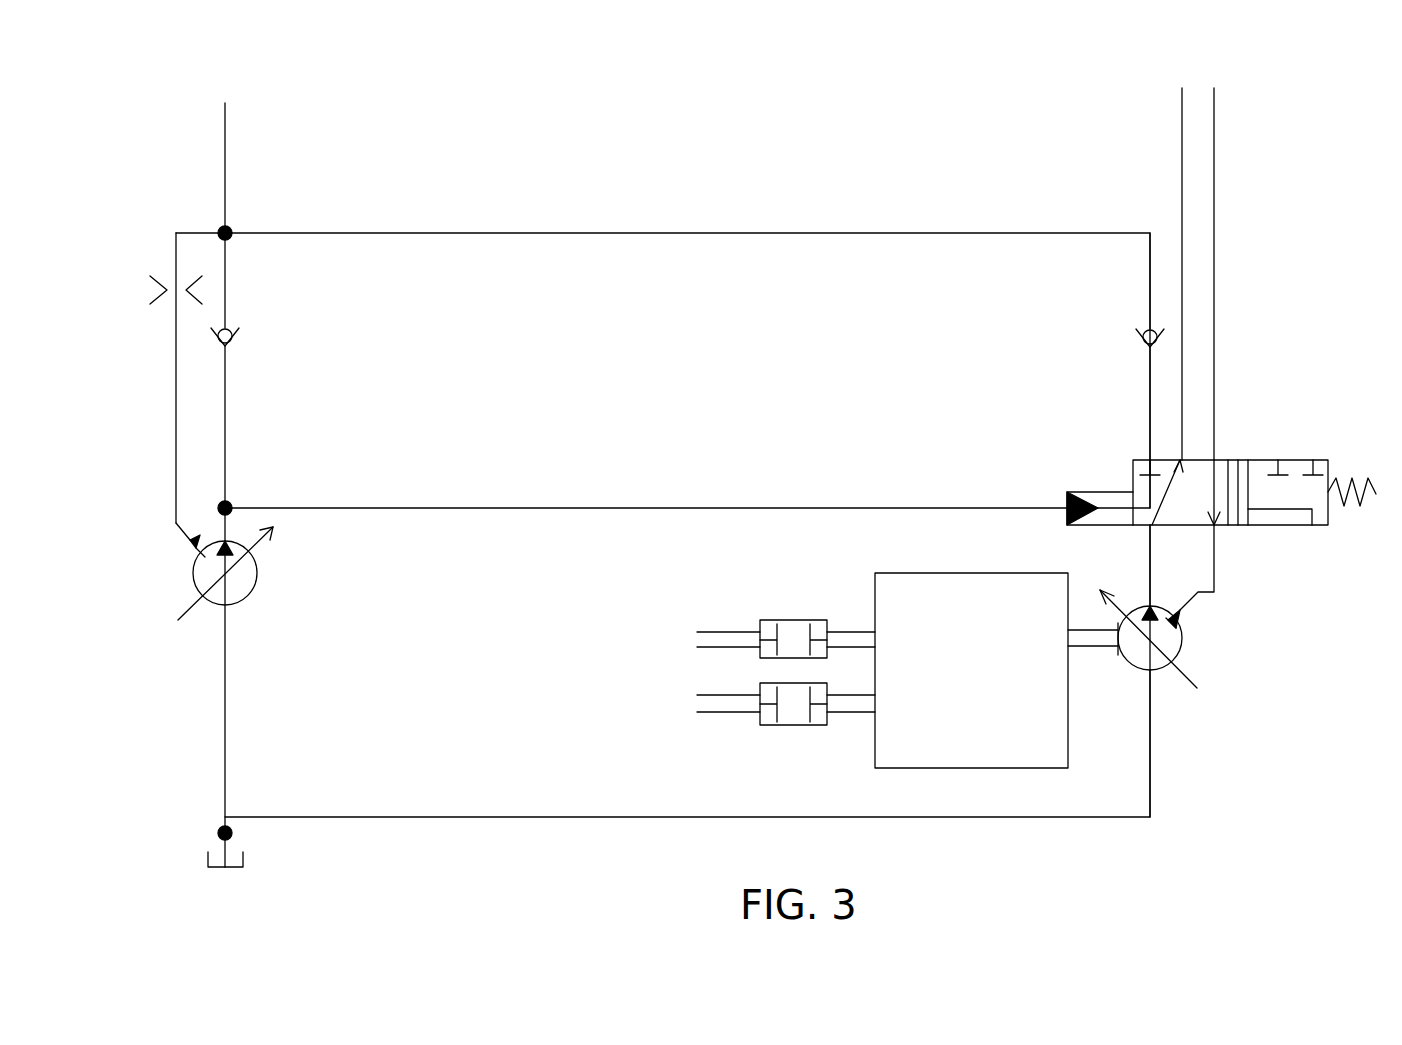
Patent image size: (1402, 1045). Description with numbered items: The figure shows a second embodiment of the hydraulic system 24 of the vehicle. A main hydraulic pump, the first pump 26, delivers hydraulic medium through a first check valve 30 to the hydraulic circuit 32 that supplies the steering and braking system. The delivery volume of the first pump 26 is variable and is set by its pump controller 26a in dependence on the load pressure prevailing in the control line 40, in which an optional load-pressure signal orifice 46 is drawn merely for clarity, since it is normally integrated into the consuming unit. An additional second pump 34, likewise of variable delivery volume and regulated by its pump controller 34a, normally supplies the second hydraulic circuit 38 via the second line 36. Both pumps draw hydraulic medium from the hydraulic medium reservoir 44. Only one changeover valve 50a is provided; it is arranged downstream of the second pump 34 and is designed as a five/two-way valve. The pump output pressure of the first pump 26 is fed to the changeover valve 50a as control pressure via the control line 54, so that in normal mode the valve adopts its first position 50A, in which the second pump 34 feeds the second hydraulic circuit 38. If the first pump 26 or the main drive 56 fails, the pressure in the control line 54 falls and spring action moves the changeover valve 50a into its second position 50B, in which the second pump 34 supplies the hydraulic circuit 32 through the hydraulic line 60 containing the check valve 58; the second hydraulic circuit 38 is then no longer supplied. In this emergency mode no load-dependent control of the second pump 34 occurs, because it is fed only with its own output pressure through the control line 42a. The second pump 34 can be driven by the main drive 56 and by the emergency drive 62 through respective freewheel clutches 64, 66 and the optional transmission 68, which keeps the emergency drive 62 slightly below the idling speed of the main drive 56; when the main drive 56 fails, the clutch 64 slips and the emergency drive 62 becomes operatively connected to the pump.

The hydraulic system 24 is at (752, 104).
The first pump 26 is at (217, 606).
The pump controller 26a is at (190, 552).
The first check valve 30 is at (238, 342).
The hydraulic circuit 32 is at (225, 163).
The second pump 34 is at (1160, 672).
The pump controller 34a is at (1185, 622).
The second line 36 is at (1182, 190).
The second hydraulic circuit 38 is at (1214, 185).
The control line 40 is at (176, 432).
The control line 42a is at (1214, 553).
The hydraulic medium reservoir 44 is at (208, 858).
The load-pressure signal orifice 46 is at (156, 276).
The changeover valve 50a is at (1247, 425).
The first position 50A is at (1120, 447).
The second position 50B is at (1308, 435).
The control line 54 is at (663, 533).
The main drive 56 is at (725, 630).
The check valve 58 is at (1143, 335).
The hydraulic line 60 is at (1150, 382).
The emergency drive 62 is at (725, 702).
The clutch 64 is at (790, 620).
The clutch 66 is at (784, 730).
The transmission 68 is at (990, 684).